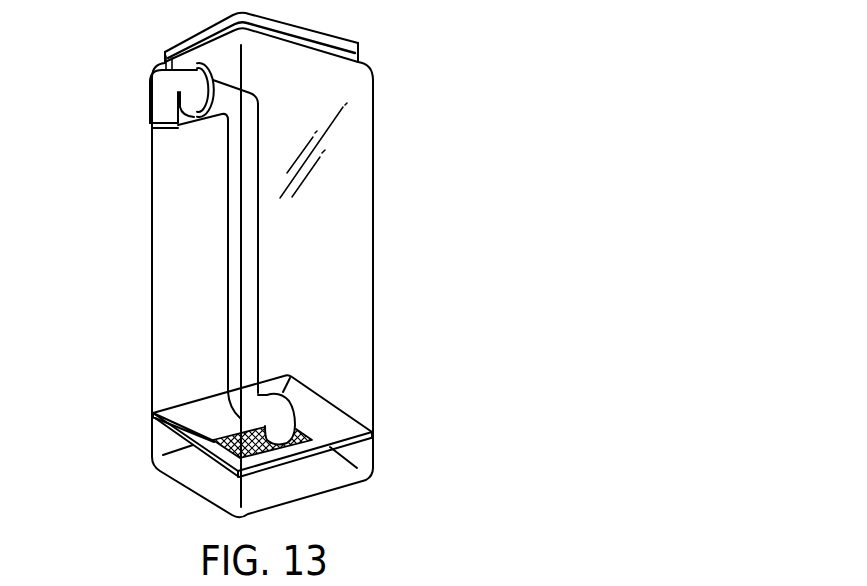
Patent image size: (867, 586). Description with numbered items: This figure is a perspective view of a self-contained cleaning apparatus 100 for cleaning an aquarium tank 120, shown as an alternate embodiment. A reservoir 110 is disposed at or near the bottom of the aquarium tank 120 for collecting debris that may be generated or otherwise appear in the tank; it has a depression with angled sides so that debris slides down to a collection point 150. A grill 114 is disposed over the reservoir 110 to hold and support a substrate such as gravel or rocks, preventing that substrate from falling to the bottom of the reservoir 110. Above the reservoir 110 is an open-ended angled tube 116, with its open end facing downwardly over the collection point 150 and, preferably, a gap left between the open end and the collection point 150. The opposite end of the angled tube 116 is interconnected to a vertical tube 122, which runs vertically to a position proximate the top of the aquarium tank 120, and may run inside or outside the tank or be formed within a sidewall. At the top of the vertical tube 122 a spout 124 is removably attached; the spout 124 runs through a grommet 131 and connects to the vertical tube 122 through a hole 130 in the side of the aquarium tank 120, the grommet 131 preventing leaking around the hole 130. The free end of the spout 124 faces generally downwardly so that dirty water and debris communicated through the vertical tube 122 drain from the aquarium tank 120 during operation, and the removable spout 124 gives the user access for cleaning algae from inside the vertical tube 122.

The self-contained cleaning apparatus 100 is at (480, 60).
The reservoir 110 is at (363, 440).
The grill 114 is at (296, 437).
The angled tube 116 is at (293, 418).
The aquarium tank 120 is at (347, 211).
The vertical tube 122 is at (228, 303).
The spout 124 is at (158, 106).
The hole 130 is at (193, 122).
The grommet 131 is at (167, 63).
The collection point 150 is at (228, 452).